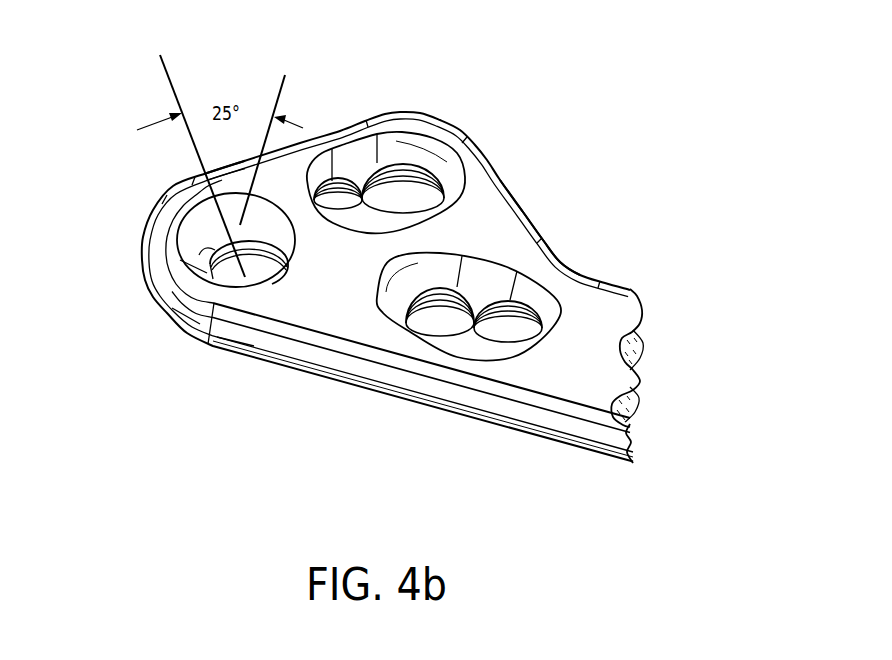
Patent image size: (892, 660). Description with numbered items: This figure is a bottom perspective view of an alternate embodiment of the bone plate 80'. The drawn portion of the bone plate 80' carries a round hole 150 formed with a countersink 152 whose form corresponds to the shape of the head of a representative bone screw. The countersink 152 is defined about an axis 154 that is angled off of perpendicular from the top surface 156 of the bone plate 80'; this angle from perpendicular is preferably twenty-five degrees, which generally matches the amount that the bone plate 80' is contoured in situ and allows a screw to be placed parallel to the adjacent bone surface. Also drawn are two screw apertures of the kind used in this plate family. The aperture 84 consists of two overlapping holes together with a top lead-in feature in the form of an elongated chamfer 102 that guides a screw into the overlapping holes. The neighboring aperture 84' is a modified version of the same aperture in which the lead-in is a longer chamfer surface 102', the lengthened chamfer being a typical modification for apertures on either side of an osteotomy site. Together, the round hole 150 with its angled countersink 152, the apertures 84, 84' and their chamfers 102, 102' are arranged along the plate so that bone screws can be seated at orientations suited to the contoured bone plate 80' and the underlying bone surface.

The bone plate 80' is at (433, 286).
The aperture 84 is at (420, 162).
The aperture 84' is at (492, 402).
The elongated chamfer 102 is at (386, 146).
The longer chamfer surface 102' is at (432, 343).
The round hole 150 is at (153, 283).
The countersink 152 is at (193, 243).
The axis 154 is at (165, 70).
The top surface 156 is at (497, 230).